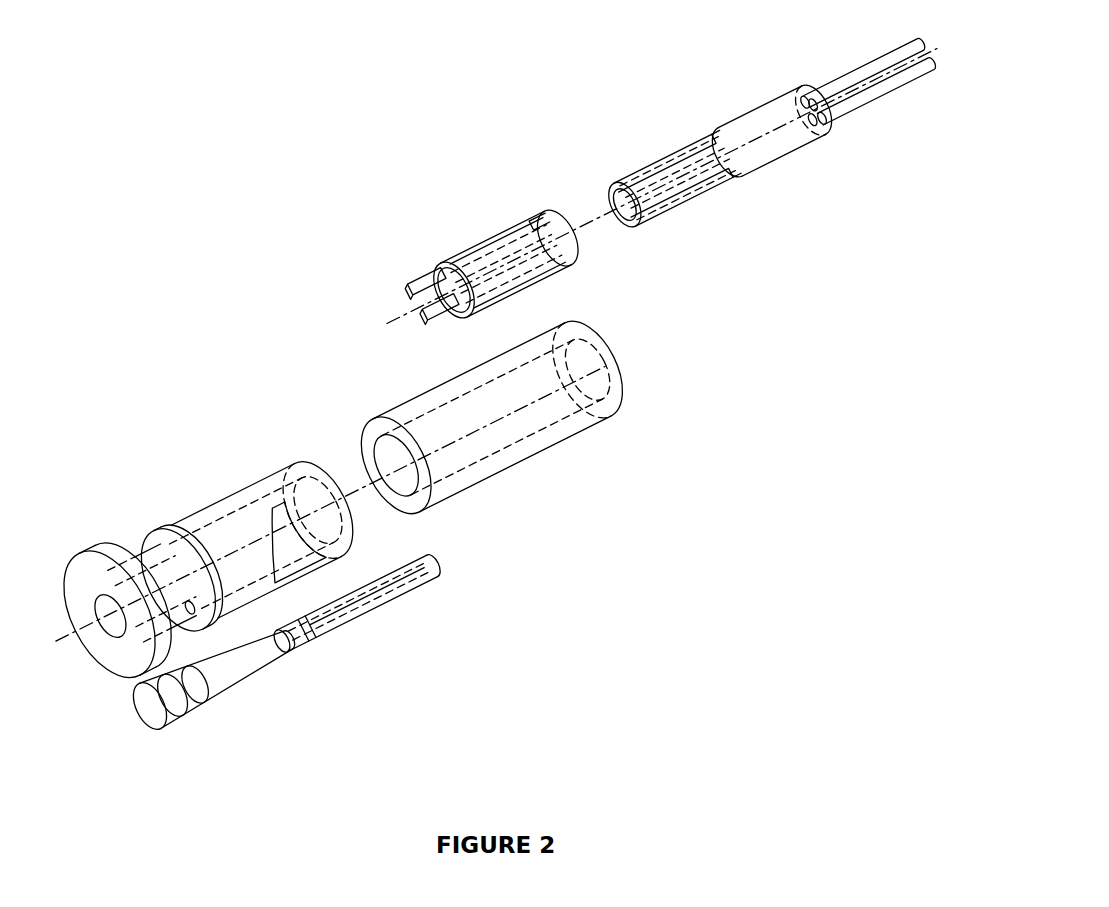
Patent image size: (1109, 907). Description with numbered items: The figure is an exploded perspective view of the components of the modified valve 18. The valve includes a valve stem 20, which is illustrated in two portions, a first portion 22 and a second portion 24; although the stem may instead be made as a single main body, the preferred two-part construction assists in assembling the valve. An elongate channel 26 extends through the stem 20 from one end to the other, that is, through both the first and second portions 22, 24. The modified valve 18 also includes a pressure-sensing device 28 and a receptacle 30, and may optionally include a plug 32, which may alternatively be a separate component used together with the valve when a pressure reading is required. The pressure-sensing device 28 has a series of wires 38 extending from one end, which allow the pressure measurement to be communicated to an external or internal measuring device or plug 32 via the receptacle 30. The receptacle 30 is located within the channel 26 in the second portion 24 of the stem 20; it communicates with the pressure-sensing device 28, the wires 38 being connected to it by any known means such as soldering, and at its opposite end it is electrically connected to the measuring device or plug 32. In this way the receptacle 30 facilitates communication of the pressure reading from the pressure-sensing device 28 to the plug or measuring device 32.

The modified valve 18 is at (118, 83).
The valve stem 20 is at (212, 319).
The first portion 22 is at (177, 498).
The second portion 24 is at (558, 495).
The elongate channel 26 is at (400, 470).
The pressure-sensing device 28 is at (345, 682).
The receptacle 30 is at (476, 189).
The plug 32 is at (700, 74).
The wires 38 is at (410, 578).